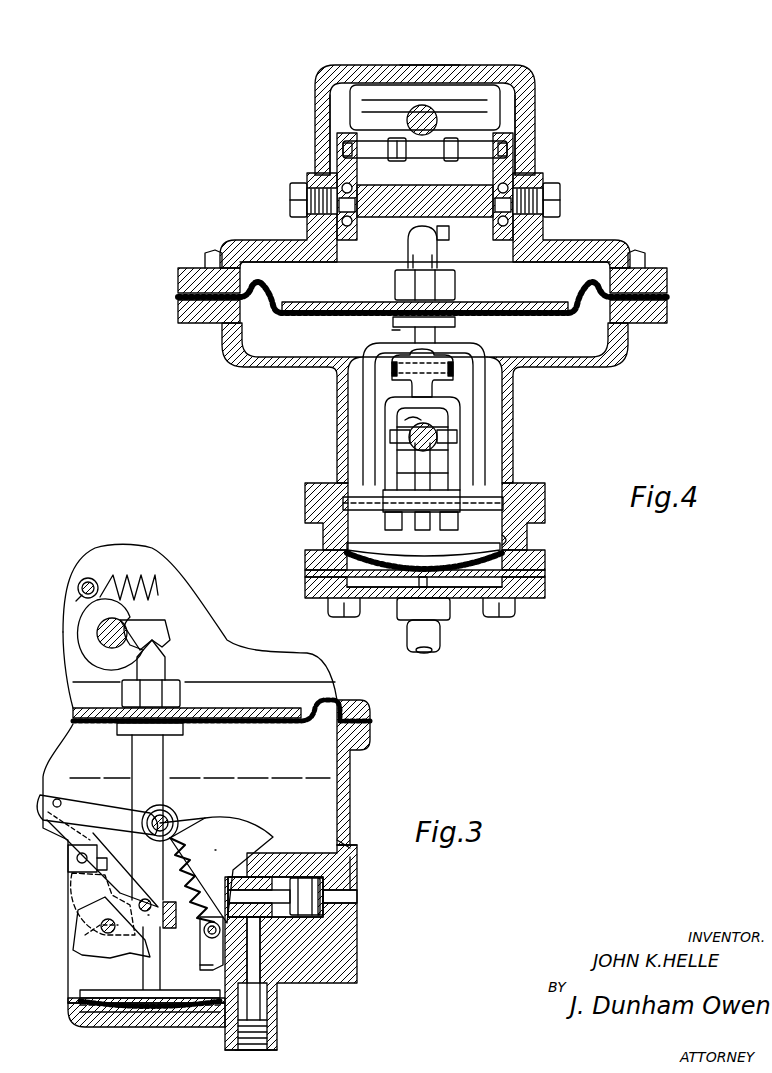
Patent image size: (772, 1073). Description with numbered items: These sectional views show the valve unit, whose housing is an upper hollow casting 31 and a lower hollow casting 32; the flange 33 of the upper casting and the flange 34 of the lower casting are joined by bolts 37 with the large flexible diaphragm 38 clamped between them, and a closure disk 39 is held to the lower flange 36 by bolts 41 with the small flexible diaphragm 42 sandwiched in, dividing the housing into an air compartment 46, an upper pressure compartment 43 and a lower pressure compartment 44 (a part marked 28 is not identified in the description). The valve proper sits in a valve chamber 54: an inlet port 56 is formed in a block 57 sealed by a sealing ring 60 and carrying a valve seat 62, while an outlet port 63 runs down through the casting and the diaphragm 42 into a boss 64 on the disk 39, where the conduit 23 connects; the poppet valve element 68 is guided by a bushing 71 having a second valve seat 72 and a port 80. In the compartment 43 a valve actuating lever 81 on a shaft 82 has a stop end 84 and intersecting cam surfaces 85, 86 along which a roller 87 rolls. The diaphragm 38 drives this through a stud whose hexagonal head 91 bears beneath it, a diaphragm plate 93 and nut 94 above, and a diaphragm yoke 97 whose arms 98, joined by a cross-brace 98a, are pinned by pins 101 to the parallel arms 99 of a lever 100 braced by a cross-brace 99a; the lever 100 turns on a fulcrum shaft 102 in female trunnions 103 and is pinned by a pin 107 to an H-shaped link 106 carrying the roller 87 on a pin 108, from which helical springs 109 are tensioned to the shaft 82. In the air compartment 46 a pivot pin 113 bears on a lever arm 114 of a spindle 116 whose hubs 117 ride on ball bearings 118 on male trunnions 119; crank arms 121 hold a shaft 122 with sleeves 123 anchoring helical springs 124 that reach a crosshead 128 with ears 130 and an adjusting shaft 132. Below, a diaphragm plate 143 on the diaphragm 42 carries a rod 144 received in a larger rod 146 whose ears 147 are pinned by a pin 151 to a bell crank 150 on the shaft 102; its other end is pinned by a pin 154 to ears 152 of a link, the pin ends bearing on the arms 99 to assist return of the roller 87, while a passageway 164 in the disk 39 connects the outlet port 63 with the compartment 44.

In FIG. 4, the conduit 23 is at (440, 645).
In FIG. 3, the conduit 23 is at (268, 1052).
In FIG. 4, the cover cap 28 is at (548, 76).
In FIG. 4, the upper hollow casting 31 is at (432, 63).
In FIG. 4, the lower hollow casting 32 is at (608, 362).
In FIG. 3, the lower hollow casting 32 is at (361, 788).
In FIG. 4, the annular flange 33 is at (178, 273).
In FIG. 4, the annular flange 34 is at (178, 320).
In FIG. 4, the annular flange 36 is at (305, 553).
In FIG. 4, the bolts 37 is at (207, 252).
In FIG. 4, the large flexible diaphragm 38 is at (178, 301).
In FIG. 3, the large flexible diaphragm 38 is at (256, 729).
In FIG. 4, the closure disk 39 is at (305, 594).
In FIG. 3, the closure disk 39 is at (135, 1027).
In FIG. 4, the bolts 41 is at (332, 612).
In FIG. 4, the small flexible diaphragm 42 is at (305, 572).
In FIG. 3, the small flexible diaphragm 42 is at (272, 1003).
In FIG. 4, the upper pressure compartment 43 is at (464, 341).
In FIG. 3, the upper pressure compartment 43 is at (200, 766).
In FIG. 4, the lower pressure compartment 44 is at (500, 578).
In FIG. 3, the lower pressure compartment 44 is at (215, 1027).
In FIG. 4, the air compartment 46 is at (425, 270).
In FIG. 3, the air compartment 46 is at (204, 668).
In FIG. 3, the valve chamber 54 is at (306, 876).
In FIG. 3, the inlet port 56 is at (357, 898).
In FIG. 3, the block 57 is at (357, 882).
In FIG. 3, the sealing ring 60 is at (340, 870).
In FIG. 3, the valve seat 62 is at (357, 860).
In FIG. 3, the outlet port 63 is at (255, 960).
In FIG. 4, the boss 64 is at (400, 620).
In FIG. 3, the movable valve element 68 is at (320, 916).
In FIG. 3, the bushing 71 is at (258, 874).
In FIG. 3, the valve seat 72 is at (278, 880).
In FIG. 3, the port 80 is at (243, 917).
In FIG. 3, the valve actuating lever 81 is at (217, 840).
In FIG. 3, the shaft 82 is at (205, 945).
In FIG. 3, the projecting lower end 84 is at (205, 968).
In FIG. 3, the cam surface 85 is at (240, 830).
In FIG. 3, the cam surface 86 is at (200, 830).
In FIG. 3, the lever actuating roller 87 is at (174, 832).
In FIG. 4, the hexagonal head 91 is at (455, 322).
In FIG. 3, the hexagonal head 91 is at (183, 734).
In FIG. 4, the diaphragm plate 93 is at (526, 299).
In FIG. 3, the diaphragm plate 93 is at (233, 714).
In FIG. 4, the nut 94 is at (455, 280).
In FIG. 3, the nut 94 is at (180, 700).
In FIG. 4, the diaphragm yoke 97 is at (392, 334).
In FIG. 4, the arms 98 is at (486, 347).
In FIG. 3, the arms 98 is at (165, 761).
In FIG. 3, the cross-brace 98a is at (198, 931).
In FIG. 4, the arms 99 is at (395, 442).
In FIG. 3, the arms 99 is at (118, 955).
In FIG. 4, the cross-brace 99a is at (527, 540).
In FIG. 3, the cross-brace 99a is at (98, 940).
In FIG. 4, the lever 100 is at (390, 405).
In FIG. 3, the lever 100 is at (70, 832).
In FIG. 3, the pins 101 is at (158, 886).
In FIG. 4, the fulcrum shaft 102 is at (372, 490).
In FIG. 3, the fulcrum shaft 102 is at (95, 950).
In FIG. 4, the female trunnions 103 is at (305, 492).
In FIG. 4, the H-shaped link 106 is at (398, 386).
In FIG. 3, the H-shaped link 106 is at (97, 817).
In FIG. 4, the pin 107 is at (392, 370).
In FIG. 3, the pin 108 is at (183, 811).
In FIG. 3, the helical springs 109 is at (200, 880).
In FIG. 4, the pivot pin 113 is at (438, 250).
In FIG. 3, the pivot pin 113 is at (167, 666).
In FIG. 4, the lever arm 114 is at (418, 232).
In FIG. 3, the lever arm 114 is at (168, 638).
In FIG. 4, the spindle 116 is at (452, 220).
In FIG. 3, the spindle 116 is at (100, 643).
In FIG. 4, the hubs 117 is at (330, 226).
In FIG. 3, the hubs 117 is at (79, 640).
In FIG. 4, the ball bearings 118 is at (330, 180).
In FIG. 4, the male trunnions 119 is at (290, 192).
In FIG. 4, the crank arm 121 is at (340, 133).
In FIG. 3, the crank arm 121 is at (92, 578).
In FIG. 4, the shaft 122 is at (340, 150).
In FIG. 3, the shaft 122 is at (80, 589).
In FIG. 4, the sleeves 123 is at (373, 160).
In FIG. 3, the sleeves 123 is at (82, 598).
In FIG. 4, the helical springs 124 is at (395, 142).
In FIG. 3, the helical springs 124 is at (160, 580).
In FIG. 4, the crosshead 128 is at (414, 113).
In FIG. 4, the ears 130 is at (330, 98).
In FIG. 4, the shaft 132 is at (436, 110).
In FIG. 4, the diaphragm plate 143 is at (410, 566).
In FIG. 3, the diaphragm plate 143 is at (85, 993).
In FIG. 3, the rod 144 is at (170, 1027).
In FIG. 4, the rod 146 is at (435, 555).
In FIG. 3, the rod 146 is at (145, 975).
In FIG. 4, the ears 147 is at (400, 472).
In FIG. 3, the bell crank 150 is at (85, 890).
In FIG. 3, the pin 151 is at (148, 915).
In FIG. 4, the ears 152 is at (420, 418).
In FIG. 3, the ears 152 is at (70, 858).
In FIG. 4, the pin 154 is at (458, 430).
In FIG. 3, the pin 154 is at (82, 866).
In FIG. 4, the passageway 164 is at (428, 585).
In FIG. 3, the passageway 164 is at (230, 1040).